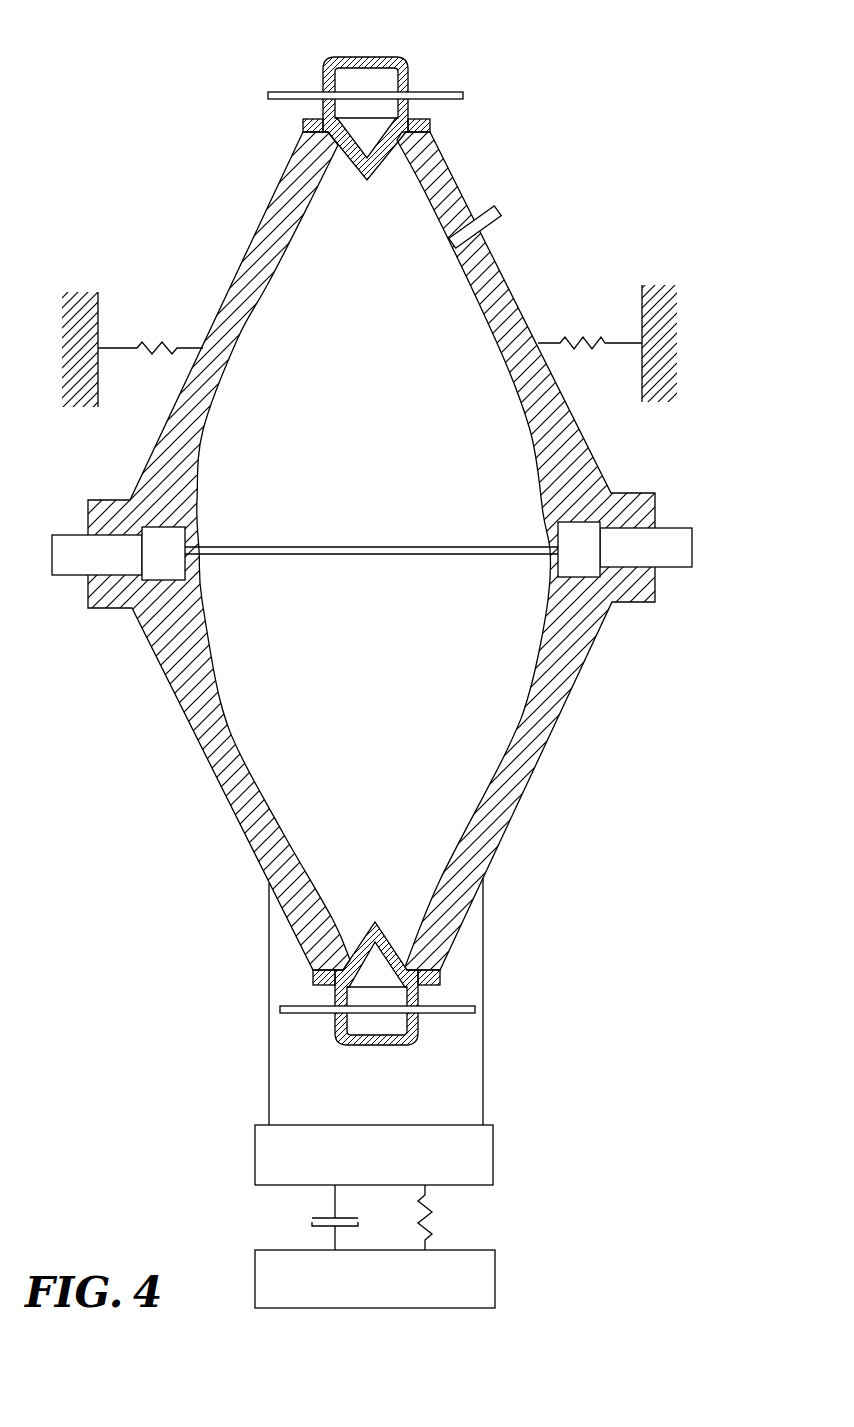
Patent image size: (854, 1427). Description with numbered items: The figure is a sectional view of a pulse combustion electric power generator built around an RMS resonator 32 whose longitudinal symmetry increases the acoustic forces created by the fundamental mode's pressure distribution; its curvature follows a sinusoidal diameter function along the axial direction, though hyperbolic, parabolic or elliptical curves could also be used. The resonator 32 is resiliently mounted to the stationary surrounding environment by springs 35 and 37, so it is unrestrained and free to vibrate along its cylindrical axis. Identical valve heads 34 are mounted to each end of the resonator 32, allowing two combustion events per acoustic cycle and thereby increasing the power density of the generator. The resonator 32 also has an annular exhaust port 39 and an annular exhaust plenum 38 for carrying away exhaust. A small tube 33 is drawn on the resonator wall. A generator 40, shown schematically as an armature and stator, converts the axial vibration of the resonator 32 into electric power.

The RMS resonator 32 is at (262, 218).
The vent tube 33 is at (487, 207).
The valve heads 34 is at (317, 63).
The spring 35 is at (157, 342).
The spring 37 is at (583, 332).
The annular exhaust plenum 38 is at (578, 562).
The annular exhaust port 39 is at (460, 548).
The generator 40 is at (532, 1177).